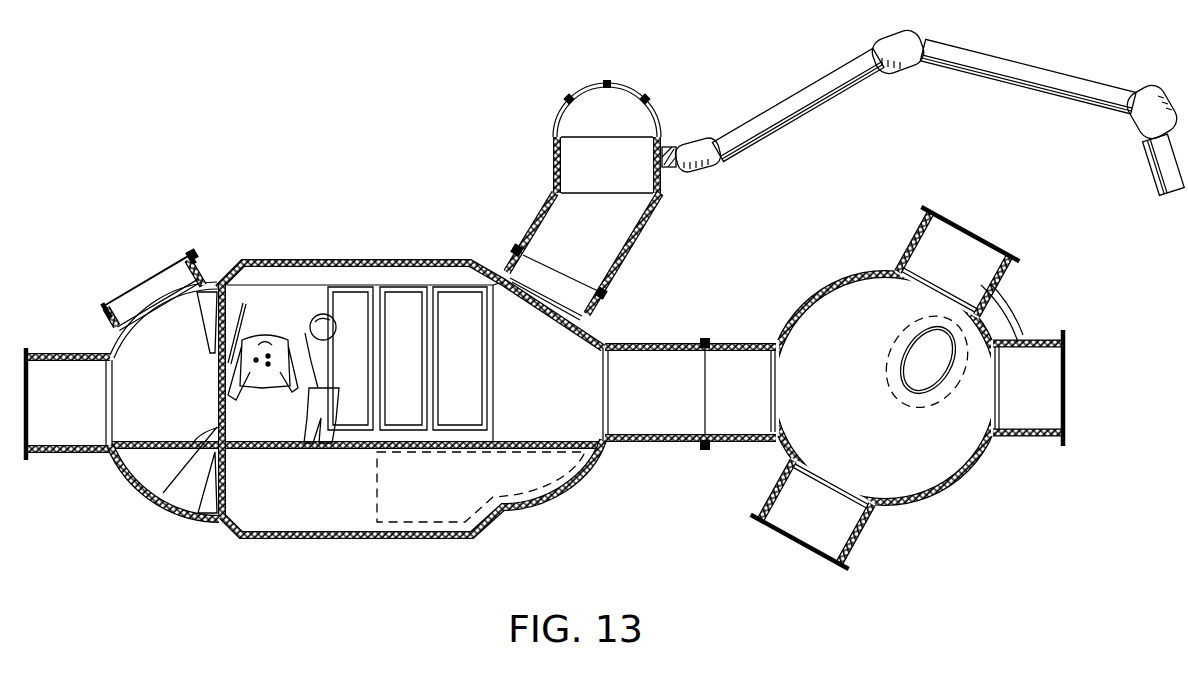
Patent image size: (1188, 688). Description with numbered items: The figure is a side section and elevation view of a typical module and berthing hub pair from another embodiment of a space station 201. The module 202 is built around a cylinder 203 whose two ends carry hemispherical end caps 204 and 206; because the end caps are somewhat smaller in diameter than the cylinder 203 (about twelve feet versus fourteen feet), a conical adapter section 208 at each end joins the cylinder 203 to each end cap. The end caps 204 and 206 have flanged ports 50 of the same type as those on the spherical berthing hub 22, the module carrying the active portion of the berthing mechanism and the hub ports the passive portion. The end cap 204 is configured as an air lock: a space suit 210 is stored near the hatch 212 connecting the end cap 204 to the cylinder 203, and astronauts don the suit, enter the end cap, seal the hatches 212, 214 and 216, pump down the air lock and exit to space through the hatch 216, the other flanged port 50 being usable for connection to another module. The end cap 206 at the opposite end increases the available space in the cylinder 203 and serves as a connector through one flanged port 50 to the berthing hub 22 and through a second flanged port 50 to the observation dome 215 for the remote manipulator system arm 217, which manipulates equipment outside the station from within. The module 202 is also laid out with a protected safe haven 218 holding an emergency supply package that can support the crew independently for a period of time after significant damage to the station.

The berthing hub 22 is at (827, 278).
The flanged port 50 is at (191, 252).
The space station 201 is at (302, 138).
The module 202 is at (346, 255).
The cylinder 203 is at (390, 260).
The hemispherical end cap 204 is at (110, 347).
The hemispherical end cap 206 is at (600, 328).
The conical adapter section 208 is at (226, 532).
The space suit 210 is at (300, 316).
The hatch 212 is at (160, 500).
The hatch 214 is at (113, 390).
The RMS workstation cupola 215 is at (586, 88).
The hatch 216 is at (148, 318).
The remote manipulator arm 217 is at (810, 92).
The safe haven area 218 is at (400, 525).